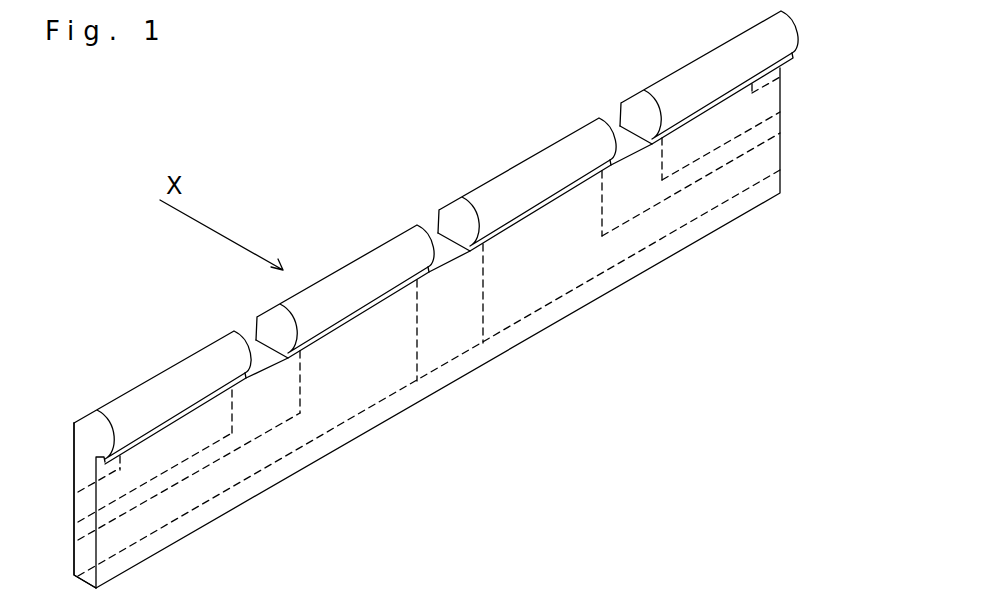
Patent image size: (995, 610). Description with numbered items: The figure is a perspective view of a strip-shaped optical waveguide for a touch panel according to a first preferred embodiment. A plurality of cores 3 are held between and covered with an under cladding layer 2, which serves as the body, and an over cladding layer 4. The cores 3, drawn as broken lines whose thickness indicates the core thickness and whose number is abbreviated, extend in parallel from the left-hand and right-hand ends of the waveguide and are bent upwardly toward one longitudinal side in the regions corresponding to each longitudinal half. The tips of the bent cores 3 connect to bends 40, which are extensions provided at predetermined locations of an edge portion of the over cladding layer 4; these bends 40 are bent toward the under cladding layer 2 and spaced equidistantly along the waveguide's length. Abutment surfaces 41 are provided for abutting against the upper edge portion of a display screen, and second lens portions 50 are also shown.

The under cladding layer 2 is at (362, 392).
The cores 3 is at (418, 345).
The over cladding layer 4 is at (72, 487).
The bends 40 is at (169, 361).
The abutment surfaces 41 is at (282, 362).
The second lens portions 50 is at (362, 272).